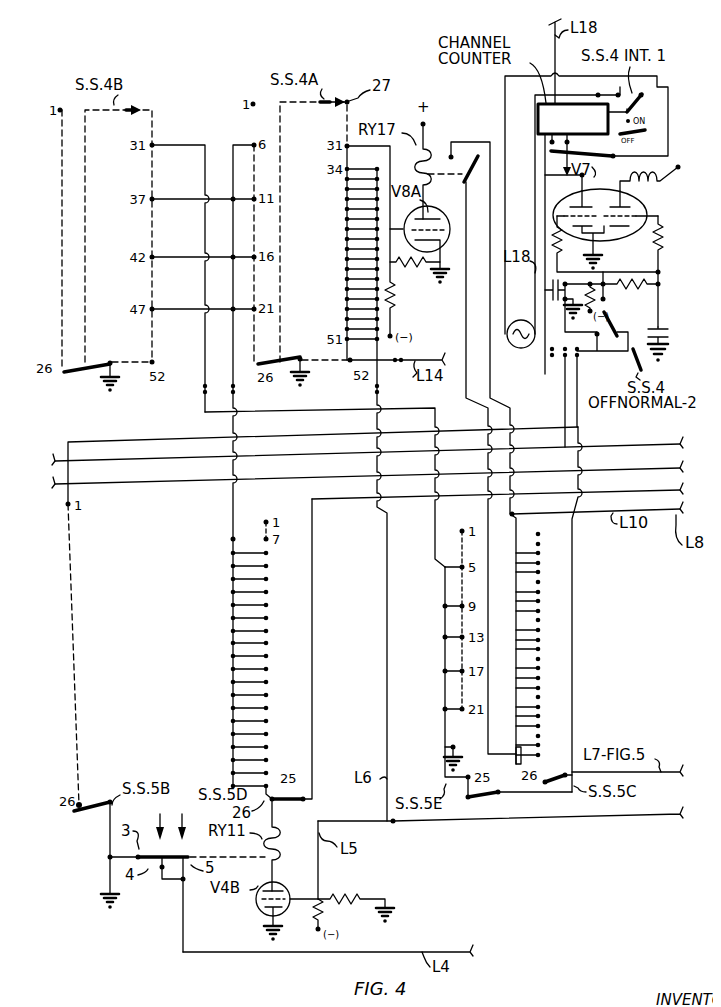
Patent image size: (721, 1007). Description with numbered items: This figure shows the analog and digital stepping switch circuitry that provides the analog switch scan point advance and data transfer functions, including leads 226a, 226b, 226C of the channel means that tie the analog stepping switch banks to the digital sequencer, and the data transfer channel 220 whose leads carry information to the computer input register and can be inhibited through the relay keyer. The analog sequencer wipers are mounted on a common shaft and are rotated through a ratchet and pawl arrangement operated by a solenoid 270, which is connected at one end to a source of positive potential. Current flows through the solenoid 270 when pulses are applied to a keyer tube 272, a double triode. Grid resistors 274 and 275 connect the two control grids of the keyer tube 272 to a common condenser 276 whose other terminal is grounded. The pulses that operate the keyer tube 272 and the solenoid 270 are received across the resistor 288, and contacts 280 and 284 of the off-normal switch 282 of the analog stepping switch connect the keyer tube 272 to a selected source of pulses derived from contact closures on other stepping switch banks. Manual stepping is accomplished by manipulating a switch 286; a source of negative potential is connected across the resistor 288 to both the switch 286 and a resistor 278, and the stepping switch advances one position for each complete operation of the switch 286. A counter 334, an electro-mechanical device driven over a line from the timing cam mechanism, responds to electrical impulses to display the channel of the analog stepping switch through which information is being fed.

The data transfer channel 220 is at (177, 472).
The lead 226a is at (577, 395).
The lead 226b is at (437, 410).
The switch bank 226C is at (574, 547).
The solenoid 270 is at (669, 178).
The keyer tube 272 is at (646, 194).
The grid resistor 274 is at (553, 239).
The grid resistor 275 is at (658, 238).
The common condenser 276 is at (678, 336).
The resistor 278 is at (610, 287).
The contact 280 is at (673, 330).
The off-normal switch 282 is at (608, 319).
The contact 284 is at (589, 337).
The switch 286 is at (545, 292).
The resistor 288 is at (610, 281).
The counter 334 is at (592, 128).